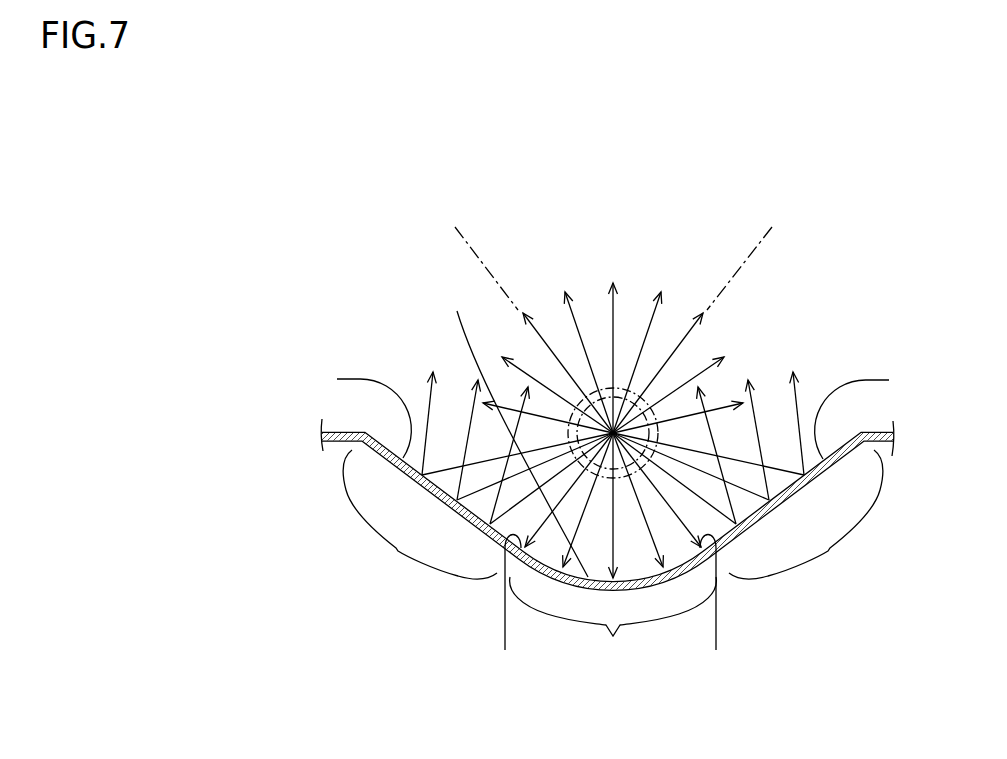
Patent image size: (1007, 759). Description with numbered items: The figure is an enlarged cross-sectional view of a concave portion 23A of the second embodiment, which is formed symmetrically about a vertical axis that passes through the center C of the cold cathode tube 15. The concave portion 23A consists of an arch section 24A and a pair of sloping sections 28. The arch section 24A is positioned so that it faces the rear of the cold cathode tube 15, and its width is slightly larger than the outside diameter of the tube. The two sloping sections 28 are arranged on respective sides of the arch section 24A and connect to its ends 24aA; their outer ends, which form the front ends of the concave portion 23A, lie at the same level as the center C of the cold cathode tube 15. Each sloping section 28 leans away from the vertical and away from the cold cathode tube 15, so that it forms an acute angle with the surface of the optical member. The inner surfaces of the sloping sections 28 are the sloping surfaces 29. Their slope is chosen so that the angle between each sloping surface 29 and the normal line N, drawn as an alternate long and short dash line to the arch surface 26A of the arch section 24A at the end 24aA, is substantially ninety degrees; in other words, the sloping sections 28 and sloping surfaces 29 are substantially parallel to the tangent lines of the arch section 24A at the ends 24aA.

The cold cathode tube 15 is at (645, 388).
The concave portion 23A is at (802, 635).
The arch section 24A is at (613, 631).
The ends of the arch section 24aA is at (621, 611).
The arch surface 26A is at (513, 424).
The sloping section 28 is at (613, 523).
The sloping surface 29 is at (613, 408).
The normal line N is at (463, 237).
The center of the cold cathode tube C is at (608, 428).